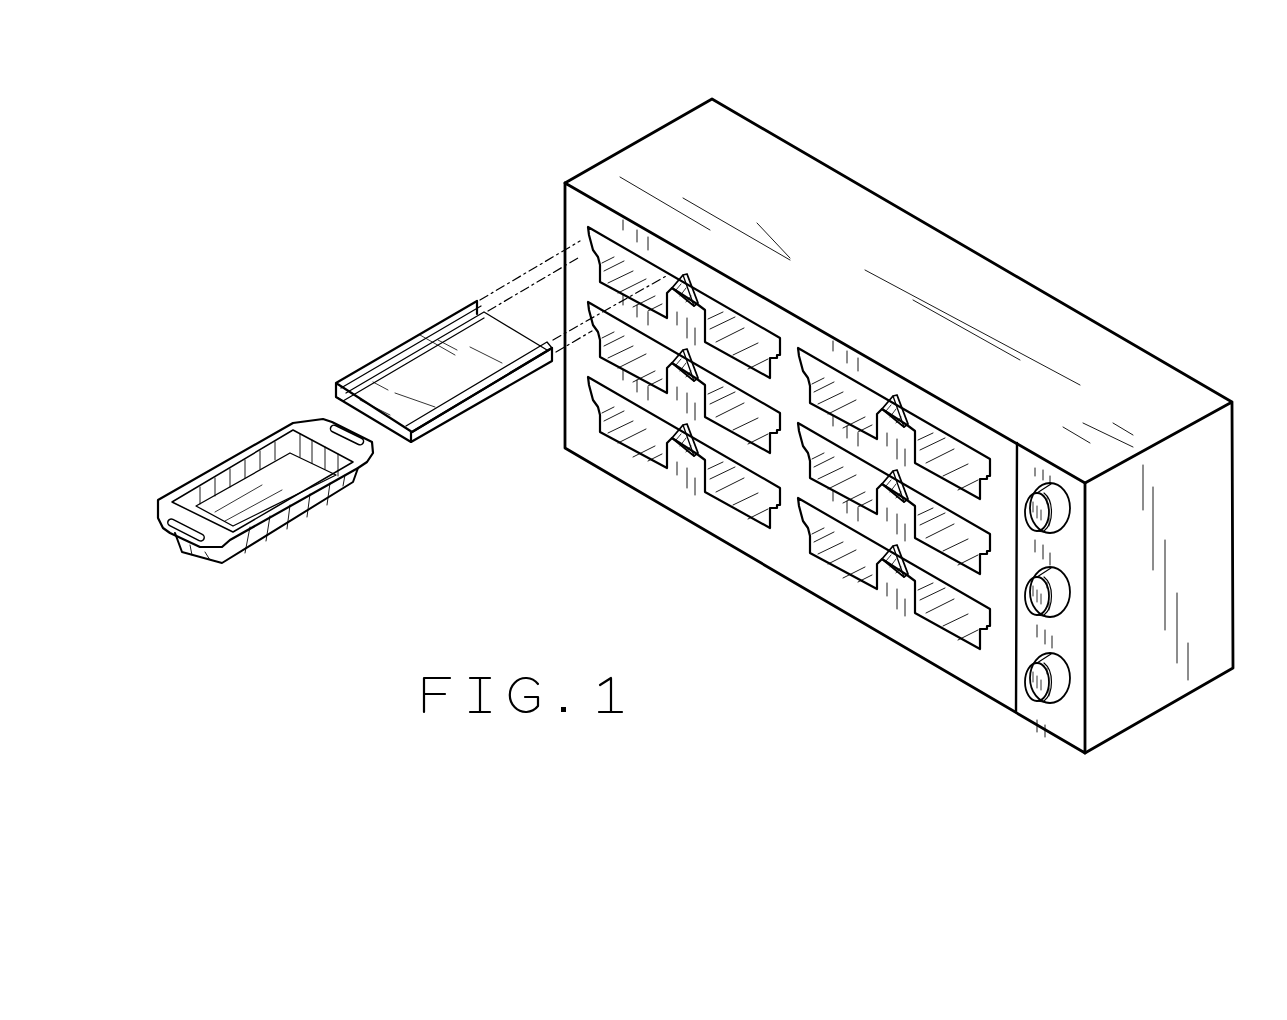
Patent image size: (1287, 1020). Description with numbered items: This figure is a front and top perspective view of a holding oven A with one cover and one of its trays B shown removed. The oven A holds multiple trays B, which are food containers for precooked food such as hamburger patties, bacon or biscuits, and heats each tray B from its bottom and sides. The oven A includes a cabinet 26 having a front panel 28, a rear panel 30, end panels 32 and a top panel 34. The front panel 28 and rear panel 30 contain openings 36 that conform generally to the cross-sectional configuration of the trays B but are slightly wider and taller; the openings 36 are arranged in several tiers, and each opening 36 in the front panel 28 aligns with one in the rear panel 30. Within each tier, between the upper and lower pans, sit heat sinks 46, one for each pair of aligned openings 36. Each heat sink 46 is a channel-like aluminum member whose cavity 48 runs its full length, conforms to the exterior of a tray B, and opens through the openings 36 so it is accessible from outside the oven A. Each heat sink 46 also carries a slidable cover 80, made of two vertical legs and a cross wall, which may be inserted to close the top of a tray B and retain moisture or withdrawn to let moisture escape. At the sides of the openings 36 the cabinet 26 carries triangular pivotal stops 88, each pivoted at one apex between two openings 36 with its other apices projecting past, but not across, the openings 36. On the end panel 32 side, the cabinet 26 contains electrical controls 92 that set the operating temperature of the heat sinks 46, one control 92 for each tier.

The cabinet 26 is at (871, 455).
The front panel 28 is at (893, 528).
The rear panel 30 is at (1113, 327).
The end panels 32 is at (1195, 530).
The top panel 34 is at (742, 148).
The openings 36 is at (747, 440).
The heat sink 46 is at (673, 415).
The cavity 48 is at (890, 552).
The cover 80 is at (430, 325).
The pivotal stops 88 is at (697, 367).
The electrical controls 92 is at (1050, 512).
The oven A is at (960, 203).
The tray B is at (235, 432).